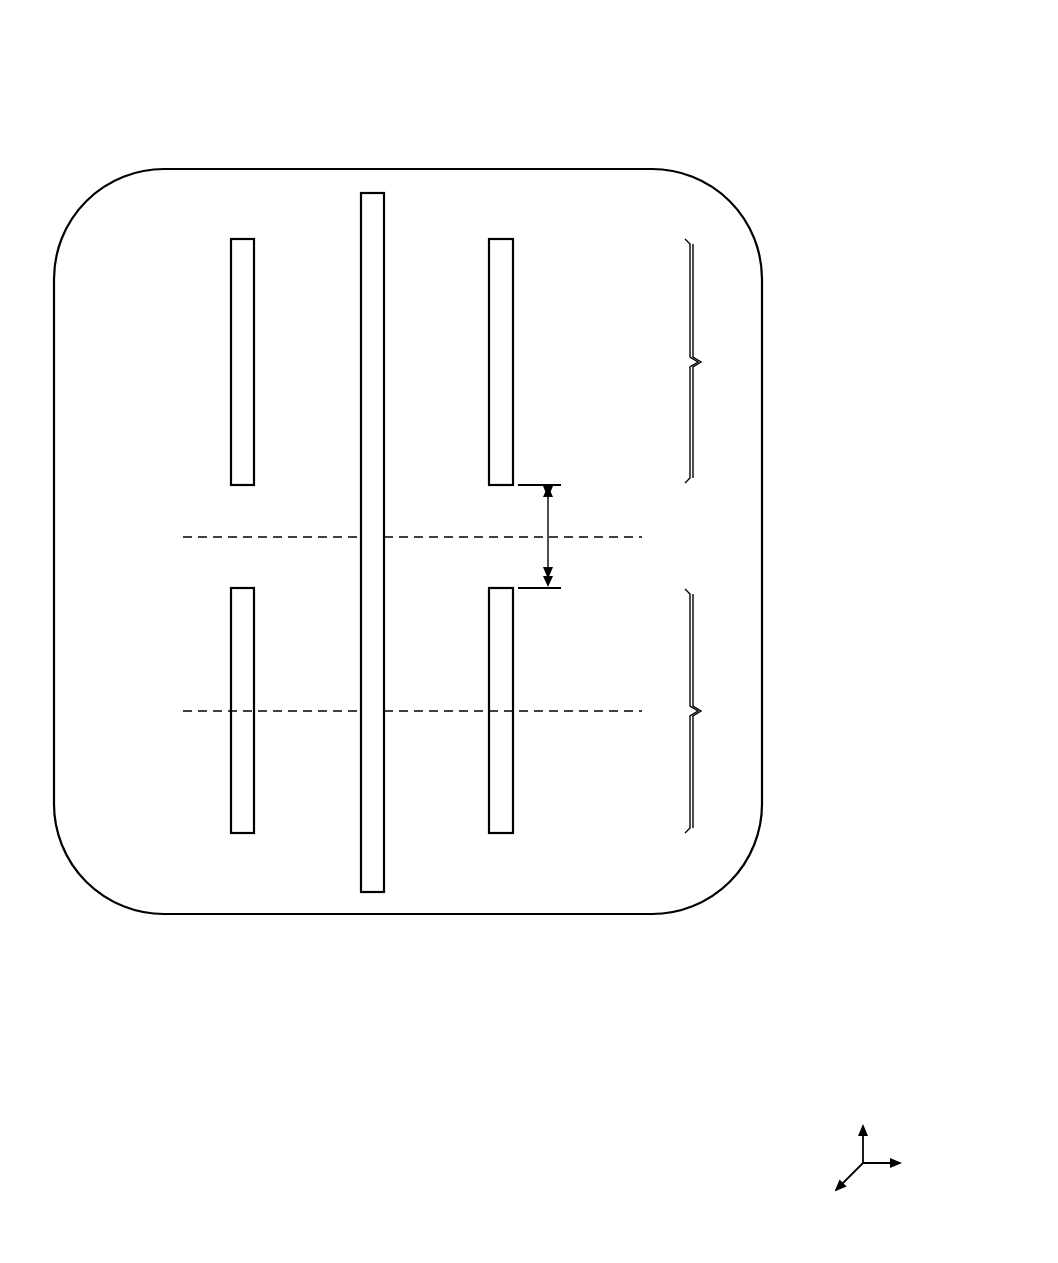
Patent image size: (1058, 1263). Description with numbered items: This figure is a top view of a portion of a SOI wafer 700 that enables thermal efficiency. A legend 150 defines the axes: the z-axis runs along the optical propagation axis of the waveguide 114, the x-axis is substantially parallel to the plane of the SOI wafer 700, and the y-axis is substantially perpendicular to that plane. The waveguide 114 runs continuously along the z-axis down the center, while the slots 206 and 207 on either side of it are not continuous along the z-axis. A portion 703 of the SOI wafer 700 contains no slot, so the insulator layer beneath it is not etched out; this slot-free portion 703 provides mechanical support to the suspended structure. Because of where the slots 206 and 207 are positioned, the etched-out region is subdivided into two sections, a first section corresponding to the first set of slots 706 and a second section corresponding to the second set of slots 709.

The SOI wafer 700 is at (68, 58).
The slot 206 is at (231, 362).
The slot 207 is at (513, 362).
The waveguide 114 is at (361, 355).
The portion of the SOI wafer 703 is at (549, 520).
The second set of slots 709 is at (721, 361).
The first set of slots 706 is at (721, 711).
The legend 150 is at (875, 1066).